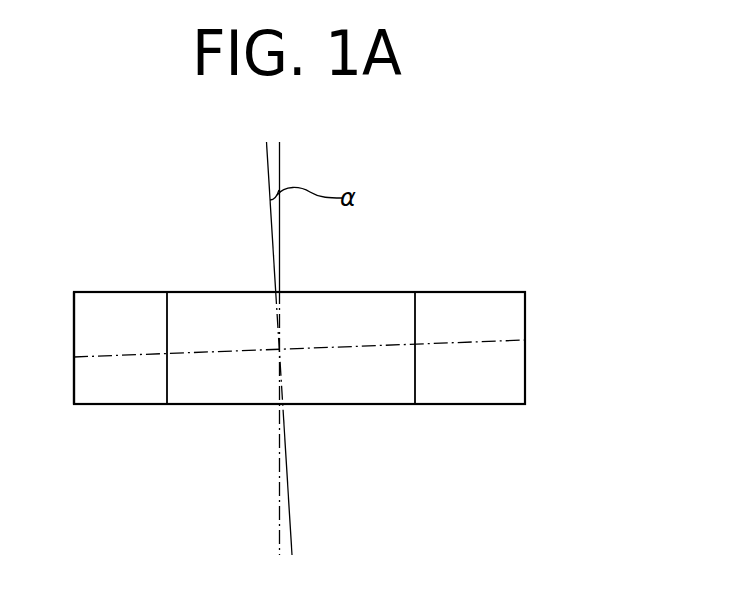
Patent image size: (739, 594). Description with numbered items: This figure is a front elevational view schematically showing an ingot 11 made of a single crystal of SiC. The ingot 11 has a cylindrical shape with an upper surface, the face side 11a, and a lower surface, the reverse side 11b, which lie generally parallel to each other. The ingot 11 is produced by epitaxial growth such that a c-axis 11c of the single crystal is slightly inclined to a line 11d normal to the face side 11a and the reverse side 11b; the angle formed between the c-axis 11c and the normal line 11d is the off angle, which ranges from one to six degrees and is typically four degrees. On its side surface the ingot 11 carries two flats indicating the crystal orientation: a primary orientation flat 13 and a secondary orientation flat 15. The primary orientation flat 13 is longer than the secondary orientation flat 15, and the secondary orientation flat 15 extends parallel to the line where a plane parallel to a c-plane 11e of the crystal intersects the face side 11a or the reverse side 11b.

The ingot 11 is at (534, 296).
The face side 11a is at (110, 292).
The reverse side 11b is at (155, 405).
The c-axis 11c is at (267, 163).
The normal line 11d is at (280, 153).
The c-plane 11e is at (464, 342).
The primary orientation flat 13 is at (355, 390).
The secondary orientation flat 15 is at (74, 373).